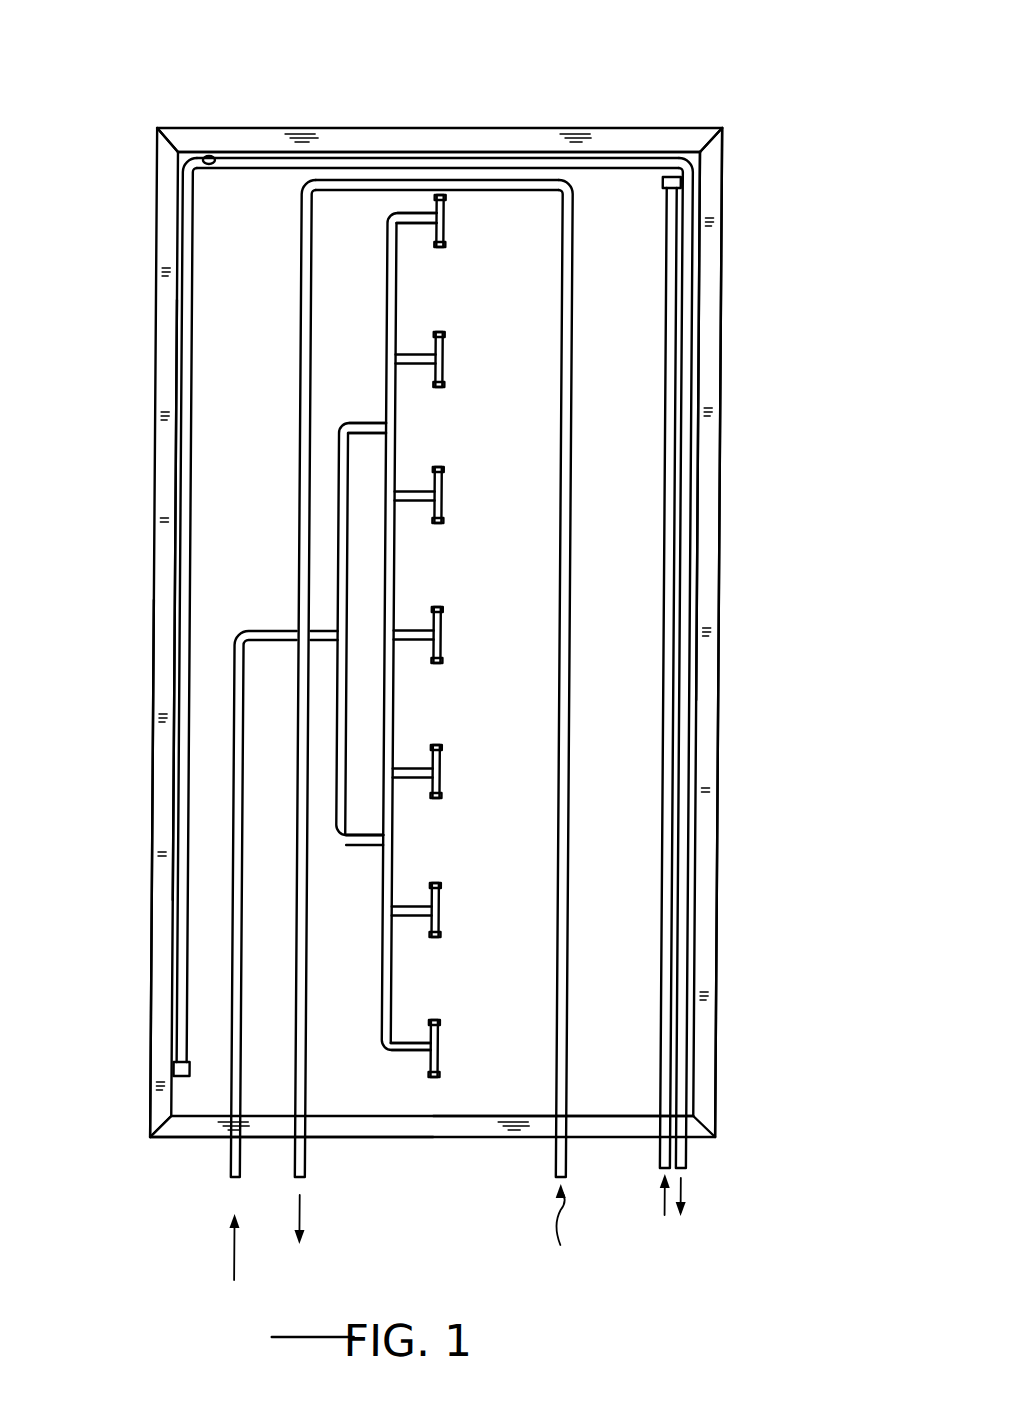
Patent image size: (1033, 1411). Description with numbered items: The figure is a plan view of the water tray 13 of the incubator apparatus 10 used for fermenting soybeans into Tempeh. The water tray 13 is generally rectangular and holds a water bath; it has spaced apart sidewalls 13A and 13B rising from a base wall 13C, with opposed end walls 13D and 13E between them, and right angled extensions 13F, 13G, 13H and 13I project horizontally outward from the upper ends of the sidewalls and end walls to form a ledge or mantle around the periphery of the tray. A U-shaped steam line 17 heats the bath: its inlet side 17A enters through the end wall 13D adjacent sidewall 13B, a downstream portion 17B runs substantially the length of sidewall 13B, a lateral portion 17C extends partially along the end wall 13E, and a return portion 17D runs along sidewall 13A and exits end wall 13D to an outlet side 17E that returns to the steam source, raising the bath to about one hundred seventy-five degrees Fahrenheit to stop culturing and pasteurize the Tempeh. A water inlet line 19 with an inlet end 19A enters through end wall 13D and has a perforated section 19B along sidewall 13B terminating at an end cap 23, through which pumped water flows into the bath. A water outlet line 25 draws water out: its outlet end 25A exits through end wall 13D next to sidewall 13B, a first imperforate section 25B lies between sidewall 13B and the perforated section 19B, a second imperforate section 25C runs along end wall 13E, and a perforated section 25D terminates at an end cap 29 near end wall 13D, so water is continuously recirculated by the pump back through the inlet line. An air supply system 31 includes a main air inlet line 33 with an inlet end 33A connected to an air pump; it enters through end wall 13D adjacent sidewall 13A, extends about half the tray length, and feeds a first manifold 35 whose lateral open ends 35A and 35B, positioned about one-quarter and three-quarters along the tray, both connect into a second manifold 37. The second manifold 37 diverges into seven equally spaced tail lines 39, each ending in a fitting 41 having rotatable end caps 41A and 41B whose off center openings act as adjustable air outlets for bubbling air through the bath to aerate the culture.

The incubator apparatus 10 is at (441, 75).
The water tray 13 is at (742, 156).
The sidewall 13A is at (158, 1092).
The sidewall 13B is at (723, 176).
The base wall 13C is at (648, 285).
The end wall 13D is at (447, 1114).
The end wall 13E is at (208, 156).
The right angled extension 13F is at (162, 1020).
The right angled extension 13G is at (716, 345).
The right angled extension 13H is at (424, 1130).
The right angled extension 13I is at (252, 140).
The steam line 17 is at (473, 665).
The inlet side 17A is at (576, 1150).
The downstream portion 17B is at (577, 660).
The lateral portion 17C is at (437, 178).
The return portion 17D is at (313, 1050).
The outlet side 17E is at (312, 1165).
The water inlet line 19 is at (704, 701).
The inlet end 19A is at (665, 1148).
The perforated section 19B is at (681, 770).
The end cap 23 is at (662, 186).
The water outlet line 25 is at (441, 643).
The outlet end 25A is at (692, 1153).
The first imperforate section 25B is at (685, 840).
The second imperforate section 25C is at (512, 158).
The perforated section 25D is at (181, 935).
The end cap 29 is at (179, 1068).
The air supply system 31 is at (210, 742).
The main air inlet line 33 is at (230, 955).
The inlet end 33A is at (237, 1178).
The first manifold 35 is at (303, 626).
The lateral open end 35A is at (369, 424).
The lateral open end 35B is at (365, 847).
The second manifold 37 is at (400, 458).
The tail line 39 is at (408, 228).
The fitting 41 is at (435, 210).
The rotatable end cap 41A is at (446, 199).
The rotatable end cap 41B is at (446, 245).